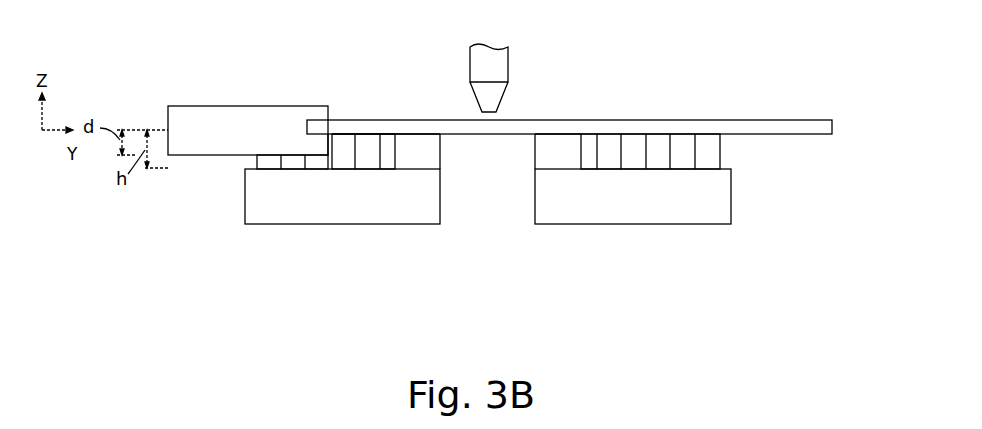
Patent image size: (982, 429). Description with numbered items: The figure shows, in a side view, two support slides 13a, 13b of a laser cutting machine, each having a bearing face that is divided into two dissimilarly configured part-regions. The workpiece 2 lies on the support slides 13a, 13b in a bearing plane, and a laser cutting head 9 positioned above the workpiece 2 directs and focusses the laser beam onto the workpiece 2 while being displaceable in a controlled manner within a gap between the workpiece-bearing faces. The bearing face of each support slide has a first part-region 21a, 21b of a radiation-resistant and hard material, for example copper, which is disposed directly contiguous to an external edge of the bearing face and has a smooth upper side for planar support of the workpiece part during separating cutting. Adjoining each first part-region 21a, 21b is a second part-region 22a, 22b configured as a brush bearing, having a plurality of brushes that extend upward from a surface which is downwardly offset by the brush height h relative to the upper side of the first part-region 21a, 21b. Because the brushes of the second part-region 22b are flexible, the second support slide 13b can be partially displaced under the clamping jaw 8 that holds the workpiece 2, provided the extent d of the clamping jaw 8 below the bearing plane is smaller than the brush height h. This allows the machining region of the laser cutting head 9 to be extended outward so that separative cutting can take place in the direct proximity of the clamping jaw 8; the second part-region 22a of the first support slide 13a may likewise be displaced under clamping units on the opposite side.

The workpiece 2 is at (792, 126).
The clamping jaw 8 is at (200, 118).
The laser cutting head 9 is at (497, 67).
The first support slide 13a is at (683, 212).
The second support slide 13b is at (298, 212).
The first part-region 21a is at (554, 134).
The first part-region 21b is at (415, 134).
The second part-region 22a is at (675, 155).
The second part-region 22b is at (332, 154).